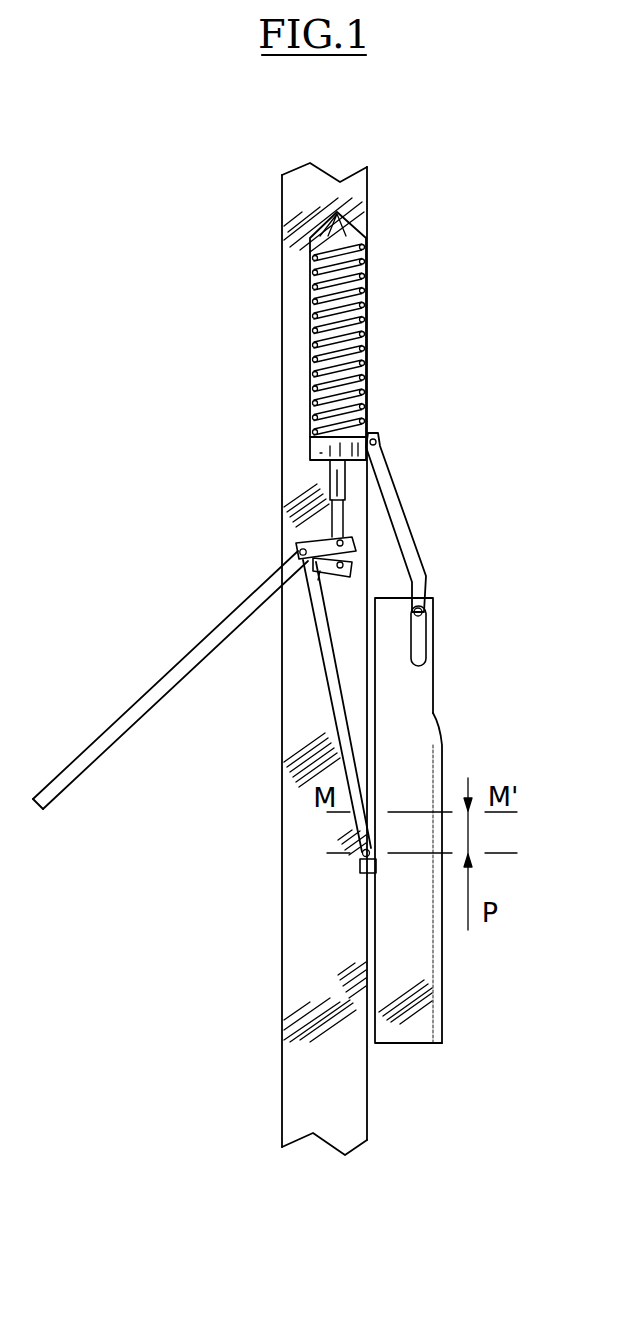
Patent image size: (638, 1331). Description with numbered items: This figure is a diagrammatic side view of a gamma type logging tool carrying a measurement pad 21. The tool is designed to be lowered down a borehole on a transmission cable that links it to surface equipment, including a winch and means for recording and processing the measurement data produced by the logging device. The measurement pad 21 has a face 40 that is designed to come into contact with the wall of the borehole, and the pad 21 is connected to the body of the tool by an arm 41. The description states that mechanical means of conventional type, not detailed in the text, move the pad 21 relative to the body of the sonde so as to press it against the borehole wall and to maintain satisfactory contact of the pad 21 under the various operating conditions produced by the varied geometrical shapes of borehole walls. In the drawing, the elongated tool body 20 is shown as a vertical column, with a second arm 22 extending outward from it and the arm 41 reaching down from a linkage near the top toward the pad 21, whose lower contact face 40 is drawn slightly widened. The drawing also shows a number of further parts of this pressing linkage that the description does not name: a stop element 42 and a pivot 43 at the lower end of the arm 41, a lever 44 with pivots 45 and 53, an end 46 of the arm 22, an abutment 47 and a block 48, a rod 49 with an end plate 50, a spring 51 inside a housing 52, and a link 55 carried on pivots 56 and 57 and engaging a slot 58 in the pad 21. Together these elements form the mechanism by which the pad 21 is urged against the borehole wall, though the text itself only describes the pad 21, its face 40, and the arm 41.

The column 20 is at (288, 690).
The measurement pad 21 is at (412, 700).
The arm 22 is at (173, 678).
The face 40 is at (440, 758).
The arm 41 is at (310, 773).
The stop 42 is at (377, 1025).
The pivot pin 43 is at (360, 866).
The lever 44 is at (320, 538).
The pivot 45 is at (346, 539).
The arm end 46 is at (50, 797).
The abutment 47 is at (318, 575).
The block 48 is at (355, 568).
The rod 49 is at (340, 482).
The spring plate 50 is at (320, 447).
The spring 51 is at (367, 307).
The spring housing 52 is at (367, 372).
The pivot 53 is at (299, 552).
The link 55 is at (418, 552).
The pivot 56 is at (377, 438).
The pivot 57 is at (433, 598).
The slot 58 is at (420, 645).